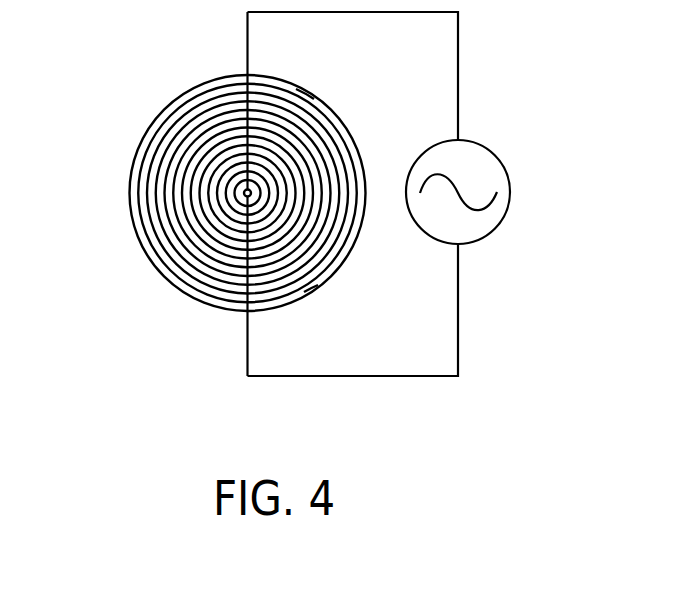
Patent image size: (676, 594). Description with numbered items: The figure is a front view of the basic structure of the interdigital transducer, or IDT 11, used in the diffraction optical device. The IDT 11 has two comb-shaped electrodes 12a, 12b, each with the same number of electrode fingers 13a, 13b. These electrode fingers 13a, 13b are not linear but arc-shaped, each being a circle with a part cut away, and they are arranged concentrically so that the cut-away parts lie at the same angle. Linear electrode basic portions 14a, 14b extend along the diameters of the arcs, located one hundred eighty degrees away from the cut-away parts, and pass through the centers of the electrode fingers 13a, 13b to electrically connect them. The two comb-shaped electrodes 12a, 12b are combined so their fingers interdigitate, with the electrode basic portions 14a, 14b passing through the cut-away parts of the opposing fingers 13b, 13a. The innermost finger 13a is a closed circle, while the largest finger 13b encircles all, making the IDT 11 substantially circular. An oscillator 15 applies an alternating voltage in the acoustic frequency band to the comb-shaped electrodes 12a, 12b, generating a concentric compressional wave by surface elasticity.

The interdigital transducer 11 is at (241, 199).
The comb-shaped electrode 12a is at (212, 79).
The comb-shaped electrode 12b is at (212, 316).
The electrode fingers 13a is at (311, 92).
The electrode fingers 13b is at (314, 299).
The electrode basic portion 14a is at (263, 77).
The electrode basic portion 14b is at (255, 316).
The oscillator 15 is at (504, 160).